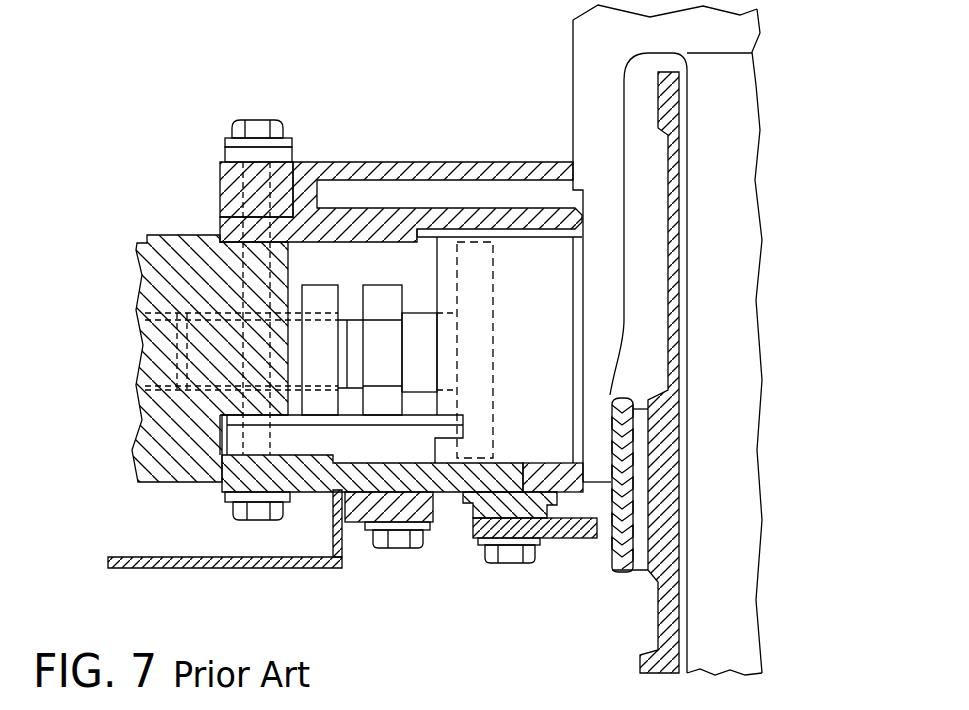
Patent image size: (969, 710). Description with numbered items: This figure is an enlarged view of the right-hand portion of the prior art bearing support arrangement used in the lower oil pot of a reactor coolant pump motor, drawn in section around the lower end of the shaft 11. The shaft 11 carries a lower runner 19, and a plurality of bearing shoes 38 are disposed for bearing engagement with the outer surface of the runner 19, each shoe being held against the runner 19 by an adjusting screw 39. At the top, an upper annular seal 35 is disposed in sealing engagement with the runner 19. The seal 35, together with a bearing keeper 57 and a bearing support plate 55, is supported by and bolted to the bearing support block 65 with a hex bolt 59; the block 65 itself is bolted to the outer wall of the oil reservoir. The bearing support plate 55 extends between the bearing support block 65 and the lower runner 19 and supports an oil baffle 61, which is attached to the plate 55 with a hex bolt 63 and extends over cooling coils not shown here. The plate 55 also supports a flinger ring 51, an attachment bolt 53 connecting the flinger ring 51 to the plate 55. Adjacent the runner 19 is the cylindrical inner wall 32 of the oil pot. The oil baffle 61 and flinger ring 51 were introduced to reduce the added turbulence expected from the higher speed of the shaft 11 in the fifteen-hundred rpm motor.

The shaft 11 is at (740, 325).
The runner 19 is at (573, 103).
The cylindrical inner wall 32 is at (658, 623).
The annular seal 35 is at (388, 162).
The bearing shoes 38 is at (545, 377).
The adjusting screws 39 is at (350, 320).
The flinger ring 51 is at (565, 538).
The attachment bolt 53 is at (503, 565).
The bearing support plate 55 is at (450, 493).
The bearing keeper 57 is at (313, 425).
The hex bolt 59 is at (232, 510).
The oil baffle 61 is at (190, 568).
The hex bolt 63 is at (370, 548).
The bearing support block 65 is at (162, 234).